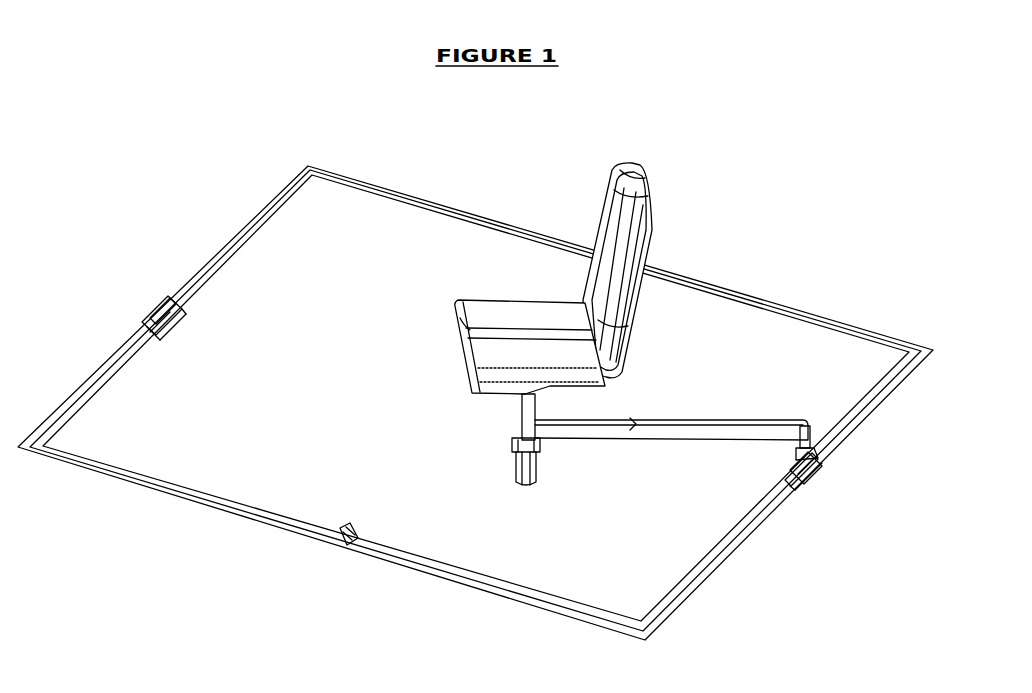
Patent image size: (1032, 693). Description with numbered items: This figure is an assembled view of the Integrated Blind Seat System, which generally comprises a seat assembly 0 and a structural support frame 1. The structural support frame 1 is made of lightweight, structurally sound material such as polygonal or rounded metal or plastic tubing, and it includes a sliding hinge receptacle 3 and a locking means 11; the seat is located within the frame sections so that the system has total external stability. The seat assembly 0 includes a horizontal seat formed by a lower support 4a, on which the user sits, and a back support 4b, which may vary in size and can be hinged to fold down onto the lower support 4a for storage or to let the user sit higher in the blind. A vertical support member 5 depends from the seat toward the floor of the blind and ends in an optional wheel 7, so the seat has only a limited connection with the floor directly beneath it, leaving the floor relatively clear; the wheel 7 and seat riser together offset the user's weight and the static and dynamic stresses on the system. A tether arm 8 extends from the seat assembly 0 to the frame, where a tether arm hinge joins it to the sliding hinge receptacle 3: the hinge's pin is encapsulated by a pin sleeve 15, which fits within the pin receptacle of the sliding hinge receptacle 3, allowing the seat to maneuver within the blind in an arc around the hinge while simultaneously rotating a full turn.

The seat assembly 0 is at (542, 337).
The structural support frame 1 is at (355, 166).
The sliding hinge receptacle 3 is at (140, 325).
The lower support 4a is at (450, 310).
The back support 4b is at (660, 238).
The vertical support member 5 is at (516, 427).
The wheel 7 is at (510, 473).
The tether arm 8 is at (597, 442).
The locking means 11 is at (343, 522).
The pin sleeve 15 is at (795, 457).